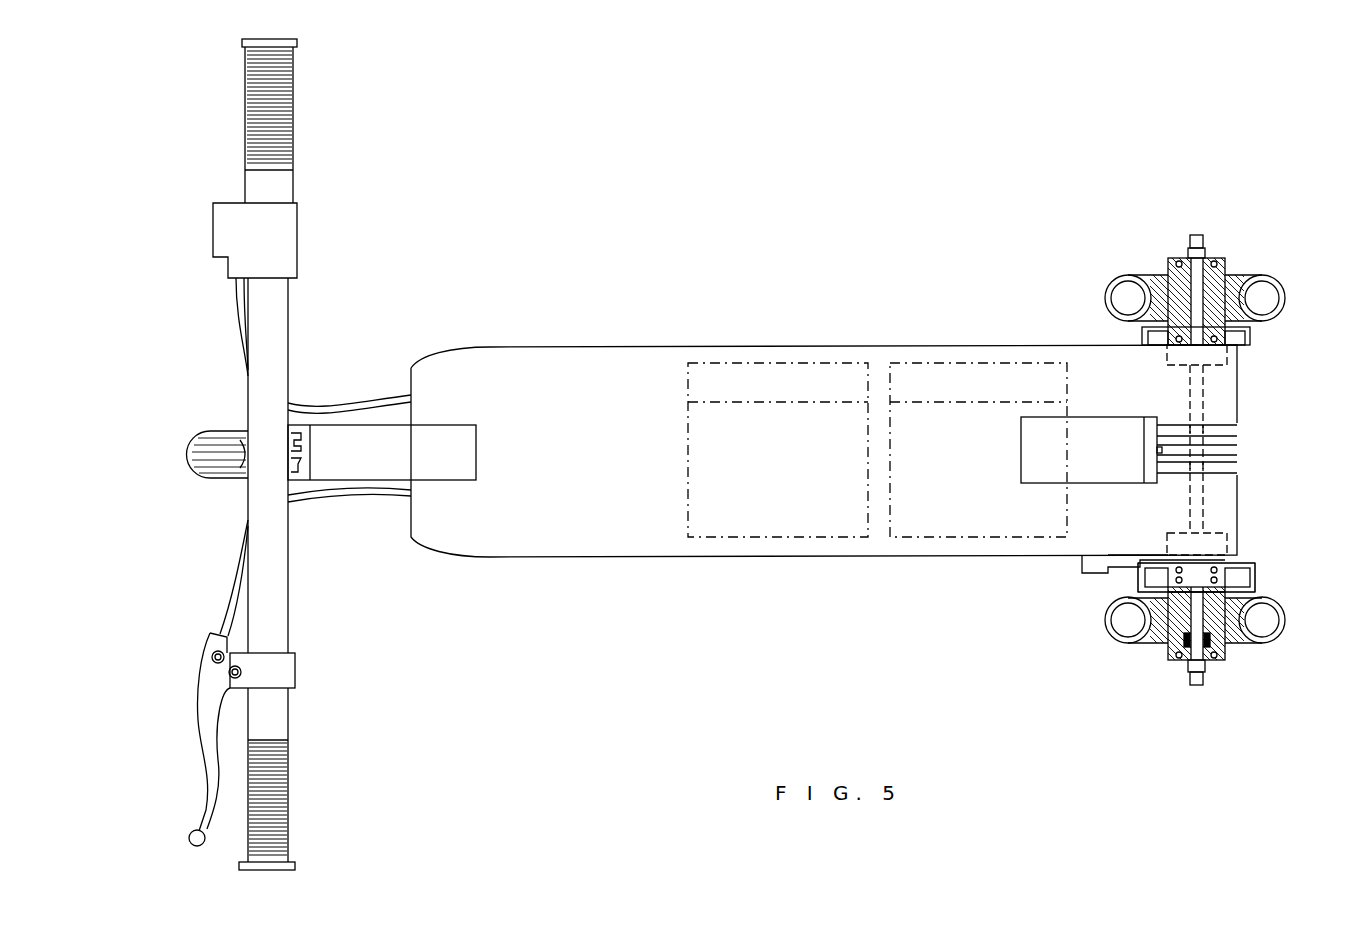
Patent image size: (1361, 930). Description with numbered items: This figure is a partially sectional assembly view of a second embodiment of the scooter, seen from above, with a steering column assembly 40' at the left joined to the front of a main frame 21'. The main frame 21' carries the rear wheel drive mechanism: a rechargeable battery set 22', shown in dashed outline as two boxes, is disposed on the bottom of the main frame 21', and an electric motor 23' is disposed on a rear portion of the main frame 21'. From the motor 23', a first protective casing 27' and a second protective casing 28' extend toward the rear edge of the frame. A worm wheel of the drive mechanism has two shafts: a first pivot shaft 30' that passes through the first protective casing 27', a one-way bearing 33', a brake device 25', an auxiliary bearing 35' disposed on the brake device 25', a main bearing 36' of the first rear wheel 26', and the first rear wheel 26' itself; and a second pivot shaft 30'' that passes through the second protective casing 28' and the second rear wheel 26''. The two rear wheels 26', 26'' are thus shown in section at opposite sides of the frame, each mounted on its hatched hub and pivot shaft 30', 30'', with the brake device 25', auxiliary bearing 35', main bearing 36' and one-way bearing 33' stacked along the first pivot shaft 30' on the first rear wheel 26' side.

The steering column handlebar assembly 40' is at (331, 454).
The main frame 21' is at (824, 419).
The rechargeable battery set 22' is at (877, 416).
The electric motor 23' is at (1091, 428).
The first protective casing 27' is at (1223, 463).
The second protective casing 28' is at (1223, 431).
The second rear wheel 26'' is at (1224, 298).
The second pivot shaft 30'' is at (1224, 297).
The first rear wheel 26' is at (1222, 620).
The first pivot shaft 30' is at (1170, 636).
The one-way bearing 33' is at (1231, 662).
The main bearing 36' is at (1220, 576).
The auxiliary bearing 35' is at (1184, 552).
The brake device 25' is at (1229, 569).